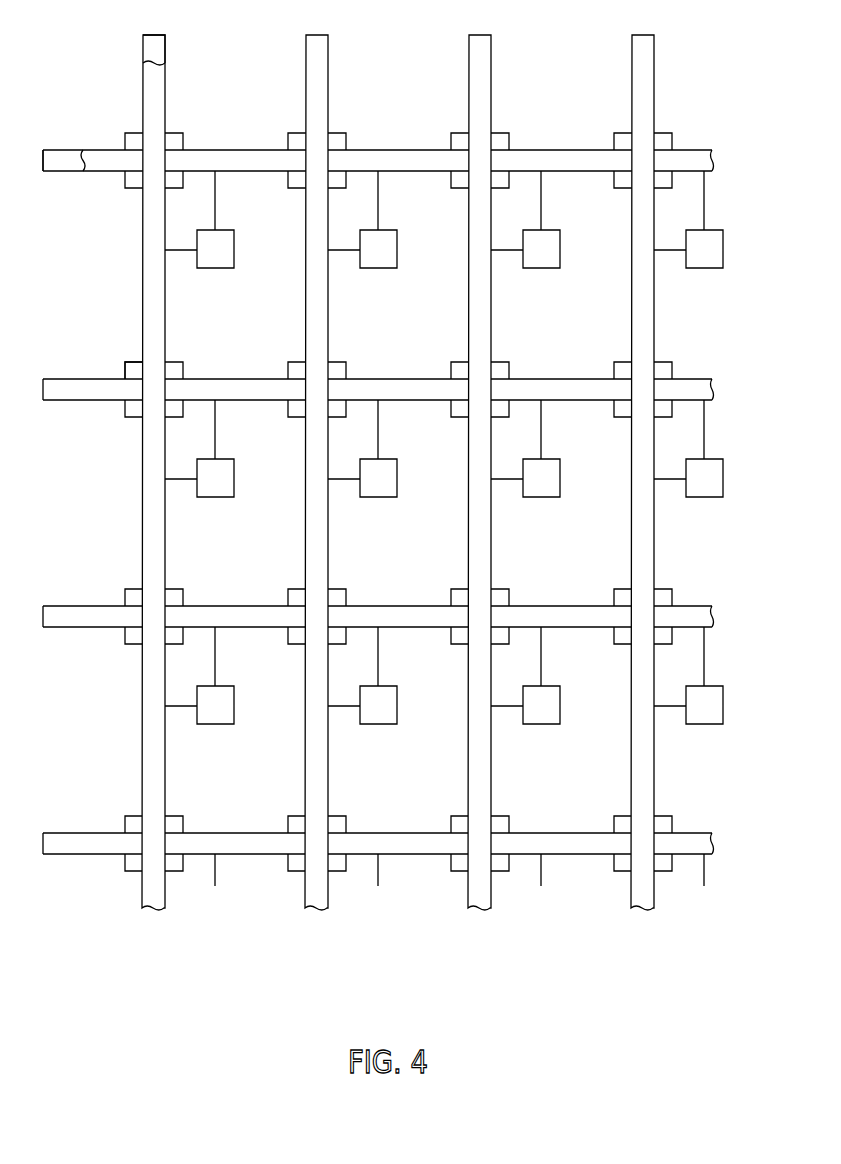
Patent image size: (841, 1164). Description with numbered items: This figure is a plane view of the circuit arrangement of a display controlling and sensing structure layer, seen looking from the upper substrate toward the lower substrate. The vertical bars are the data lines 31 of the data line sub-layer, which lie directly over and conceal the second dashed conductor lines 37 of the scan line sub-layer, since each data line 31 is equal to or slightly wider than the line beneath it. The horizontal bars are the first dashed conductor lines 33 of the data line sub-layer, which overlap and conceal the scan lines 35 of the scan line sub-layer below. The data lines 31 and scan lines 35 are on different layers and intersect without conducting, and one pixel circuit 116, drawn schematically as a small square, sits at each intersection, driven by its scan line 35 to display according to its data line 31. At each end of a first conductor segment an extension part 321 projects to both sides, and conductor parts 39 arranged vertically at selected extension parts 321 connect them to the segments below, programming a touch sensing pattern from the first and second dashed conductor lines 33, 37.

The data line 31 is at (150, 88).
The first dashed conductor line 33 is at (103, 171).
The scan line 35 is at (62, 171).
The second dashed conductor line 37 is at (148, 52).
The conductor part 39 is at (175, 372).
The extension part 321 is at (130, 375).
The pixel circuit 116 is at (217, 527).